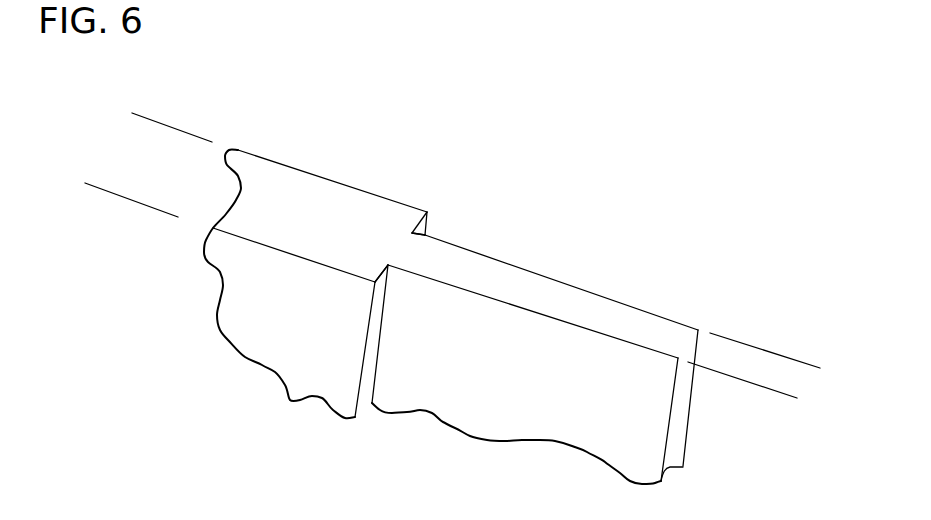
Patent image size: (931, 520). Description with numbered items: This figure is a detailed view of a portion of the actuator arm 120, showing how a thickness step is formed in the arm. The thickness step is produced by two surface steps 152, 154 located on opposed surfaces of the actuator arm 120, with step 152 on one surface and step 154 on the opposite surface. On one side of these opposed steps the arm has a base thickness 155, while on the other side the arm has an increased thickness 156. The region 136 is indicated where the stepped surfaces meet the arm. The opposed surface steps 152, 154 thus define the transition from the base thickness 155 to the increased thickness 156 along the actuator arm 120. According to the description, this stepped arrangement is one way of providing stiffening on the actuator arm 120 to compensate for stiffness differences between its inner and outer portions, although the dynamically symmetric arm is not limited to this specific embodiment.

The actuator arm 120 is at (541, 211).
The stepped surface 136 is at (395, 232).
The surface step 152 is at (375, 282).
The surface step 154 is at (427, 213).
The base thickness 155 is at (698, 443).
The increased thickness 156 is at (65, 250).